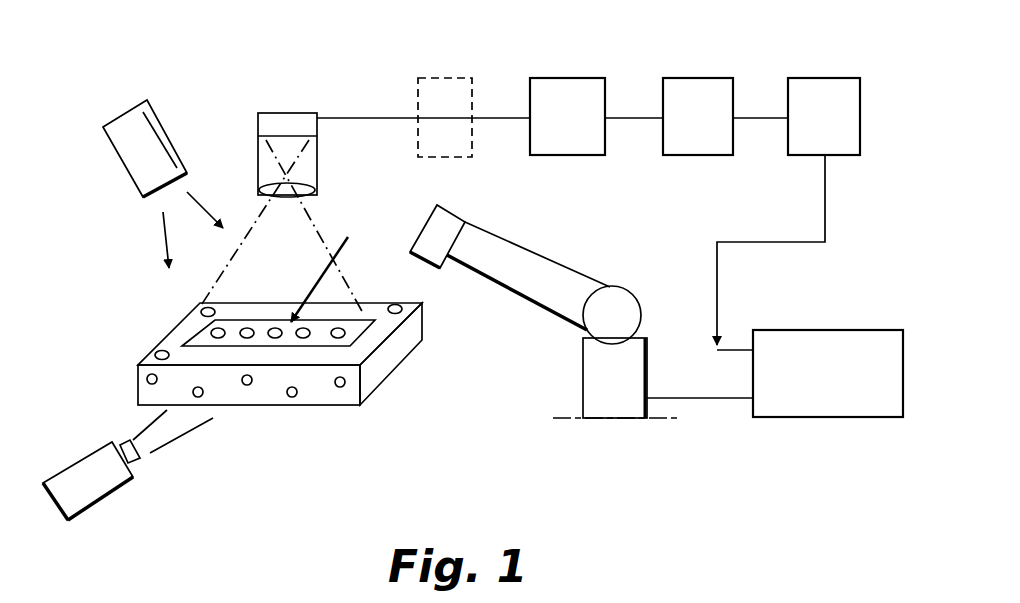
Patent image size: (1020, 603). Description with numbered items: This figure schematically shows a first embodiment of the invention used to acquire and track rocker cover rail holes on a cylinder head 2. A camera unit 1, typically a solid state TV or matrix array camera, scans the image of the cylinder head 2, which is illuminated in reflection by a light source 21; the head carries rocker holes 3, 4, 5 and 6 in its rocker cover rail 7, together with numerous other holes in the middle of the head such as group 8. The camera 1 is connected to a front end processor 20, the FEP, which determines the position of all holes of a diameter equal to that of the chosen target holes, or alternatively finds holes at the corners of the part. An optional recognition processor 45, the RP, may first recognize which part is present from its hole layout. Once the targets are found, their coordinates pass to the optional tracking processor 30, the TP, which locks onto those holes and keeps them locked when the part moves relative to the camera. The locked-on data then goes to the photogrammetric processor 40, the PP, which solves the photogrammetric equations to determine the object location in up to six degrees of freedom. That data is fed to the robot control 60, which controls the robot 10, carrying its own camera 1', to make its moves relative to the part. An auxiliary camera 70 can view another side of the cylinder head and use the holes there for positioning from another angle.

The camera unit 1 is at (281, 180).
The robot-mounted camera 1' is at (444, 256).
The cylinder head 2 is at (377, 392).
The rocker hole 3 is at (360, 348).
The rocker hole 4 is at (393, 305).
The rocker hole 5 is at (197, 305).
The rocker hole 6 is at (150, 353).
The rocker cover rail 7 is at (225, 358).
The group of holes 8 is at (337, 268).
The robot 10 is at (612, 426).
The front end processor 20 is at (590, 77).
The light source 21 is at (130, 113).
The tracking processor 30 is at (708, 77).
The photogrammetric processor 40 is at (833, 77).
The recognition processor 45 is at (444, 76).
The robot control 60 is at (833, 417).
The auxiliary camera 70 is at (108, 482).